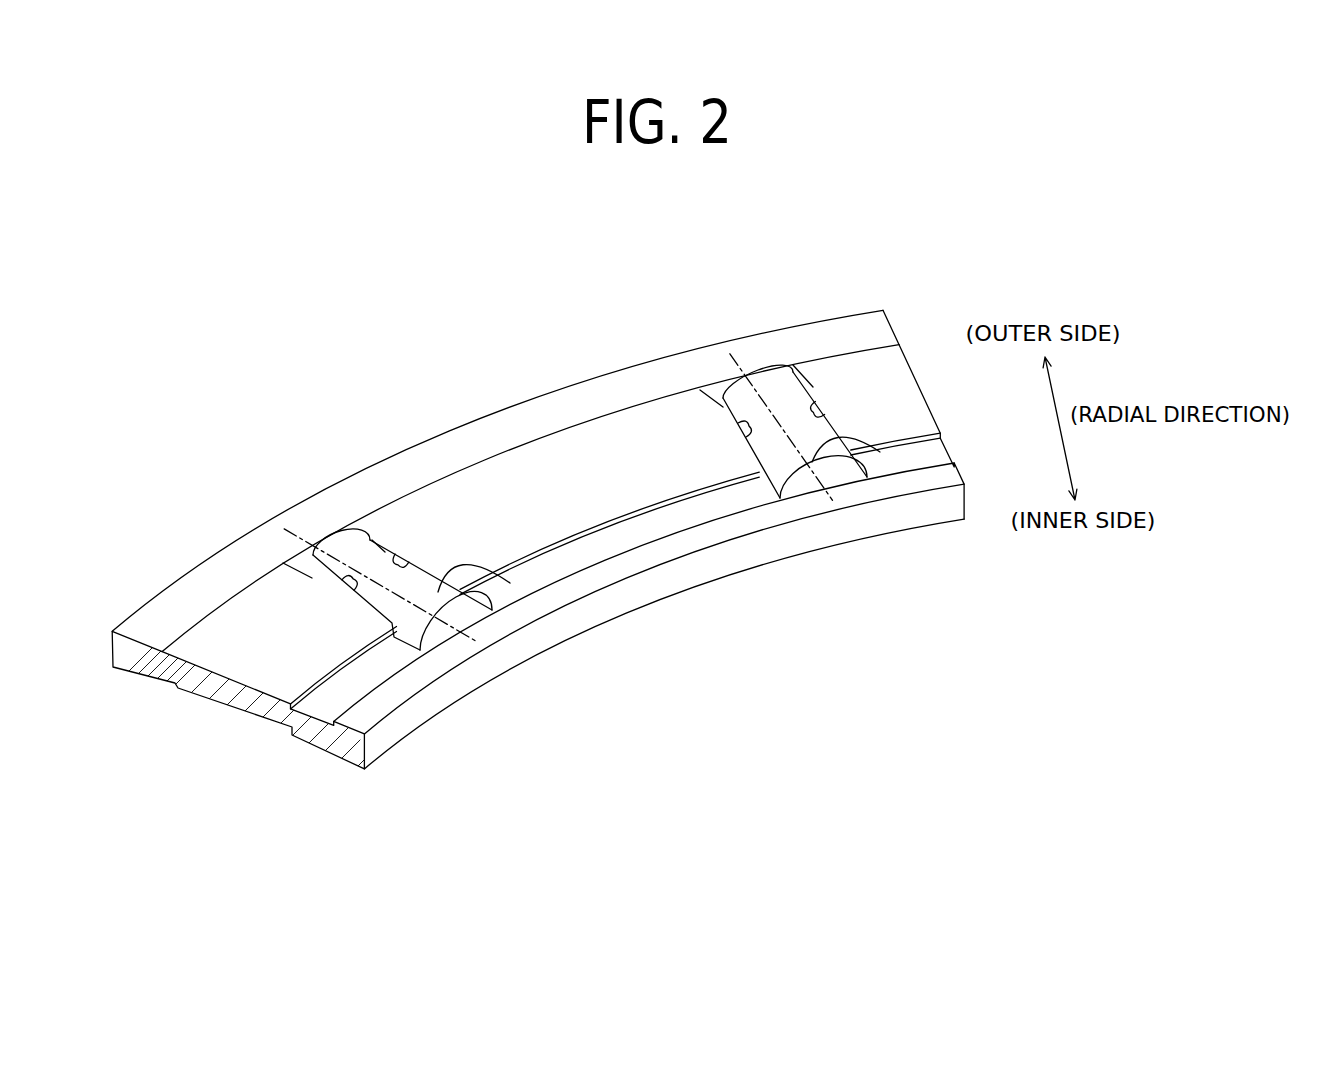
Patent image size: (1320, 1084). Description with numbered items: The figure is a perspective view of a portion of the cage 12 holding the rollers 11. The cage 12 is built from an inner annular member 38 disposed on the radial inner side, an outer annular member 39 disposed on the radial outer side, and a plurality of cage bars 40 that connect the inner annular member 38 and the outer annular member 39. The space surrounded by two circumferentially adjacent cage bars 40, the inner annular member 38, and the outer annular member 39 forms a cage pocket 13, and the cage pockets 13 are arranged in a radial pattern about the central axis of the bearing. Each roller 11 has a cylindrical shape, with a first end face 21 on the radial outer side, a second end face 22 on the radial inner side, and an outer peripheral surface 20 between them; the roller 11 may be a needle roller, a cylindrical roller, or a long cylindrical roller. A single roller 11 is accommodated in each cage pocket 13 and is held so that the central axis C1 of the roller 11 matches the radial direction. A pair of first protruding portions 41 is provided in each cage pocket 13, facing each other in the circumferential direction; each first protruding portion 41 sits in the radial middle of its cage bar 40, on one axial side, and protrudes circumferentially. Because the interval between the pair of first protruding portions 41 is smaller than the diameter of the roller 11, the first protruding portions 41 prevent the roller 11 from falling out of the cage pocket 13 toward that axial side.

The roller 11 is at (369, 529).
The cage 12 is at (580, 370).
The cage pocket 13 is at (339, 516).
The outer peripheral surface 20 is at (505, 577).
The first end face 21 is at (305, 553).
The second end face 22 is at (500, 620).
The inner annular member 38 is at (675, 582).
The outer annular member 39 is at (502, 410).
The cage bar 40 is at (198, 637).
The first protruding portion 41 is at (400, 552).
The central axis of the roller C1 is at (292, 537).